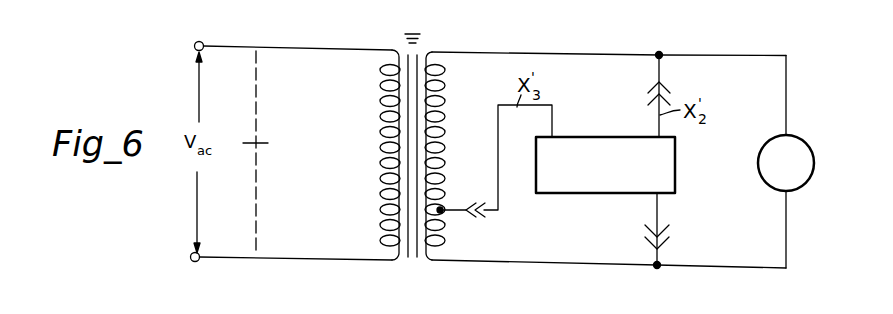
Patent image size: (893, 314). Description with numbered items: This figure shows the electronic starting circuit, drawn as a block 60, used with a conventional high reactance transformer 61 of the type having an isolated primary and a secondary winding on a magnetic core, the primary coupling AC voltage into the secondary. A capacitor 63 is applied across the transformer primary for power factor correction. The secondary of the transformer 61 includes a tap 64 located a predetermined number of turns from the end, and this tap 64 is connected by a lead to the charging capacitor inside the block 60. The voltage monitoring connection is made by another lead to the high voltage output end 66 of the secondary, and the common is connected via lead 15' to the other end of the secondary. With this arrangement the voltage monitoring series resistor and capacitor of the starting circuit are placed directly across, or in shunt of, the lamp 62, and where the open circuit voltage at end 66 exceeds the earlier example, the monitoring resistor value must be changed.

The control circuit 60 is at (604, 136).
The high reactance transformer 61 is at (405, 262).
The lamp 62 is at (805, 139).
The capacitor 63 is at (244, 153).
The tap 64 is at (442, 208).
The end 66 is at (663, 68).
The common line 15' is at (678, 231).